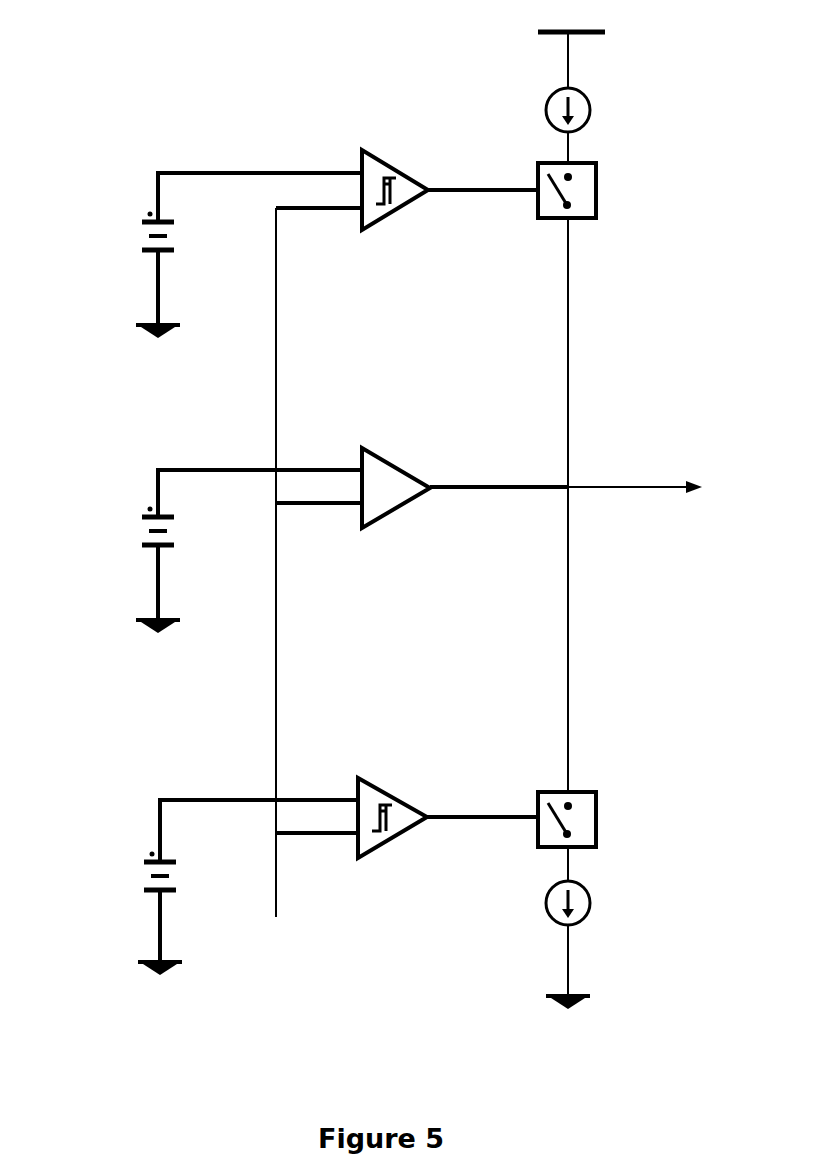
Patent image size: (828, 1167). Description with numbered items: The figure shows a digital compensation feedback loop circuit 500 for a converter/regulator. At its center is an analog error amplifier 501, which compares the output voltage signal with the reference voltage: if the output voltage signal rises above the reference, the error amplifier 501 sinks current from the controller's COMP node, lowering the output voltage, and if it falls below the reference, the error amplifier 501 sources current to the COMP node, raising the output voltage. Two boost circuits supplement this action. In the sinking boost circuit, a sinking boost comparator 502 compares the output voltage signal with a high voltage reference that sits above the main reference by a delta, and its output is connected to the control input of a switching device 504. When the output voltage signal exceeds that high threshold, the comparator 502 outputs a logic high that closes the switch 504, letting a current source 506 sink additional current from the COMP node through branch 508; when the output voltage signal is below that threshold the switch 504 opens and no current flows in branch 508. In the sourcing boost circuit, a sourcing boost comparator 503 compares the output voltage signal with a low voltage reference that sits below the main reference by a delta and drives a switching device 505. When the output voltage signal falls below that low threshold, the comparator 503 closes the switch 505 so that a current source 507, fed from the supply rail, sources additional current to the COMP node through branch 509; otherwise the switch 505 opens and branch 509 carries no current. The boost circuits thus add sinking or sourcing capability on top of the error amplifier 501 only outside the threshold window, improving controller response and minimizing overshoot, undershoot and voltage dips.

The digital compensation feedback loop circuit 500 is at (246, 1042).
The error amplifier 501 is at (410, 515).
The sinking boost comparator 502 is at (410, 843).
The sourcing boost comparator 503 is at (395, 225).
The switching device 504 is at (598, 805).
The switching device 505 is at (590, 218).
The current source 506 is at (592, 925).
The current source 507 is at (592, 112).
The branch 508 is at (573, 672).
The branch 509 is at (573, 345).